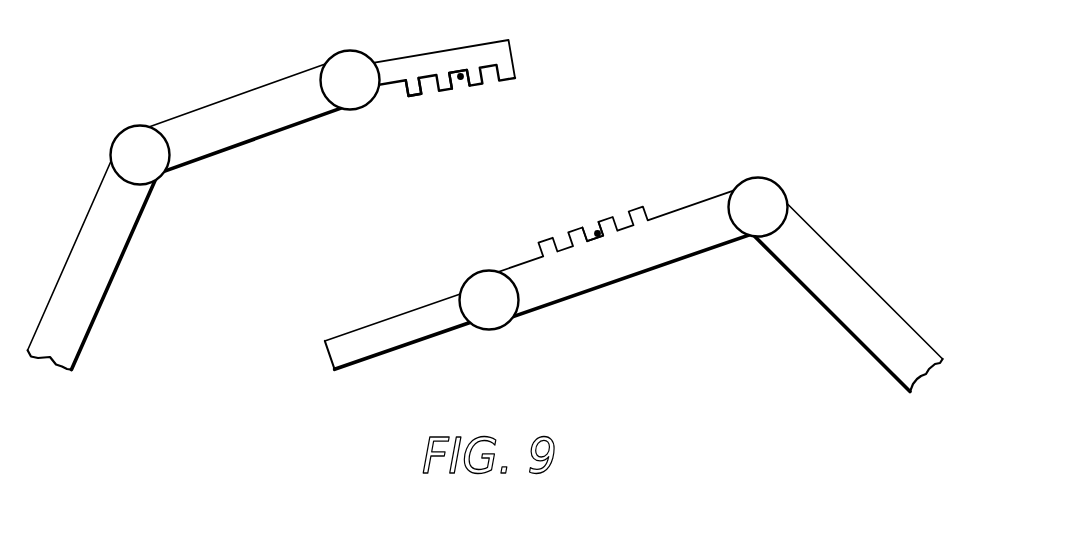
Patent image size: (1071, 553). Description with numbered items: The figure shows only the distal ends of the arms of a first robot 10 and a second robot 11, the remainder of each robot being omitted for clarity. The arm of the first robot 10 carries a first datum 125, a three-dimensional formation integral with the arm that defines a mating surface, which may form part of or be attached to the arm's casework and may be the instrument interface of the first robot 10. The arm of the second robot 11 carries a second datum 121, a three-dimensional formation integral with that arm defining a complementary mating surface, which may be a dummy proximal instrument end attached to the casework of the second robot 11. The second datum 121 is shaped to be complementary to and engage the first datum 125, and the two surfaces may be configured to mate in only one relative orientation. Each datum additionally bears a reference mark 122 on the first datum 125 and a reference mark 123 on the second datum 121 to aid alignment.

The first robot 10 is at (271, 196).
The second robot 11 is at (634, 245).
The second datum 121 is at (594, 209).
The reference mark 122 is at (466, 100).
The reference mark 123 is at (598, 237).
The first datum 125 is at (414, 97).